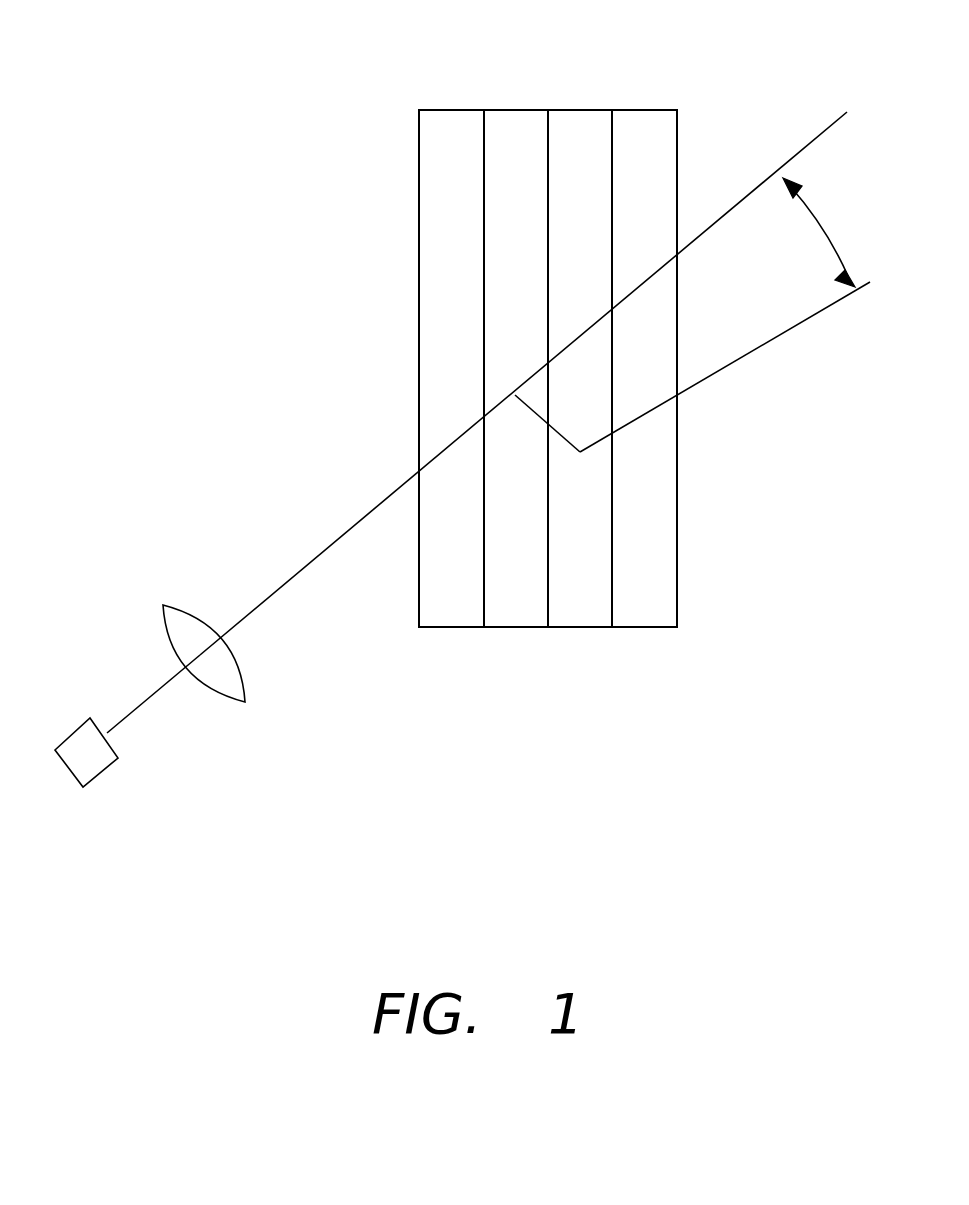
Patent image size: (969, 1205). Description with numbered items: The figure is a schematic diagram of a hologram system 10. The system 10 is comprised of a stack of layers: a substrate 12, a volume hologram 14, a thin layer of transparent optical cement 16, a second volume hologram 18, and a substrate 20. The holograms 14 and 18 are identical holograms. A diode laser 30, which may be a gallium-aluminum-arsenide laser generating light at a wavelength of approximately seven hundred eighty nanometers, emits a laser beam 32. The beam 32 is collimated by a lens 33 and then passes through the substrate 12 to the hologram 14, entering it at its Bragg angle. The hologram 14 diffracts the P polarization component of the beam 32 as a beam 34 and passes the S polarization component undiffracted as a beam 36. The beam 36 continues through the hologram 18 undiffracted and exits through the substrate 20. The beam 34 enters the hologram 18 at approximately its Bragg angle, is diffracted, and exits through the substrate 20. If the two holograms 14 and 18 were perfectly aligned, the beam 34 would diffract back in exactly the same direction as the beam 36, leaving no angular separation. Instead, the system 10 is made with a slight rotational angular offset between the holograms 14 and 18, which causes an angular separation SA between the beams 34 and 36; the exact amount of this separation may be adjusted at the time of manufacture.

The hologram system 10 is at (436, 206).
The substrate 12 is at (450, 110).
The volume hologram 14 is at (518, 110).
The transparent optical cement 16 is at (548, 110).
The volume hologram 18 is at (581, 110).
The substrate 20 is at (644, 110).
The diode laser 30 is at (73, 733).
The laser beam 32 is at (148, 700).
The lens 33 is at (188, 617).
The beam 34 is at (760, 345).
The beam 36 is at (773, 176).
The angular separation SA is at (824, 221).